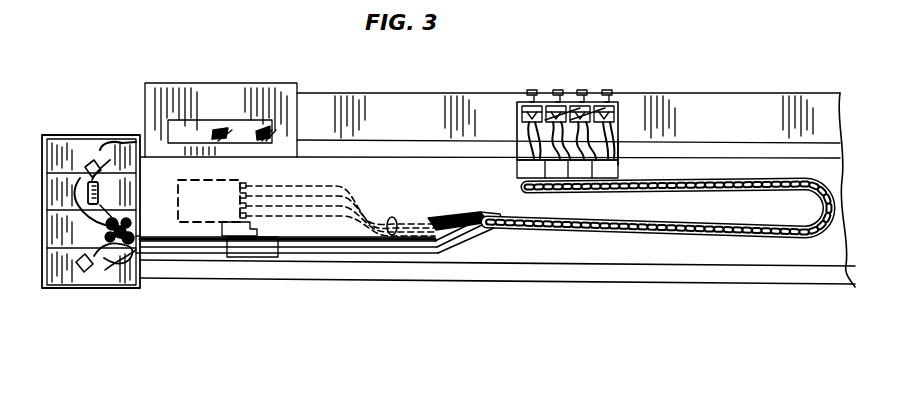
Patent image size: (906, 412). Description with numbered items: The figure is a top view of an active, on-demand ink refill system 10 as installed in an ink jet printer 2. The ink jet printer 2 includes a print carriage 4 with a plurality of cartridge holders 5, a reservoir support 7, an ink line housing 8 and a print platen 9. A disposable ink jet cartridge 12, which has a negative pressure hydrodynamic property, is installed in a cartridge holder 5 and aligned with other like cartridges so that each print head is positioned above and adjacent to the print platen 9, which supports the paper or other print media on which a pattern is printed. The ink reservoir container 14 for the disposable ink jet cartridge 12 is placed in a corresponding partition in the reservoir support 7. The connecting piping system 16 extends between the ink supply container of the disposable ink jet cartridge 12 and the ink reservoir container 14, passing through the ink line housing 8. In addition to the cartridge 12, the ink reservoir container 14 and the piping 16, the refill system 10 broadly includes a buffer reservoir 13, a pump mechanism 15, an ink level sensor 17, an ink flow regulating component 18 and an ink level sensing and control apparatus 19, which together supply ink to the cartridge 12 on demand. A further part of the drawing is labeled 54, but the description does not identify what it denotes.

The ink jet printer 2 is at (328, 294).
The print carriage 4 is at (619, 140).
The cartridge holder 5 is at (620, 138).
The reservoir support 7 is at (73, 137).
The ink line housing 8 is at (694, 238).
The print platen 9 is at (757, 104).
The ink refill system 10 is at (198, 58).
The disposable ink jet cartridge 12 is at (628, 100).
The buffer reservoir 13 is at (520, 168).
The ink reservoir container 14 is at (60, 288).
The pump mechanism 15 is at (242, 252).
The piping system 16 is at (412, 250).
The ink level sensor 17 is at (618, 145).
The ink flow regulating component 18 is at (95, 290).
The ink level sensing and control apparatus 19 is at (198, 196).
The cable clamp 54 is at (440, 244).